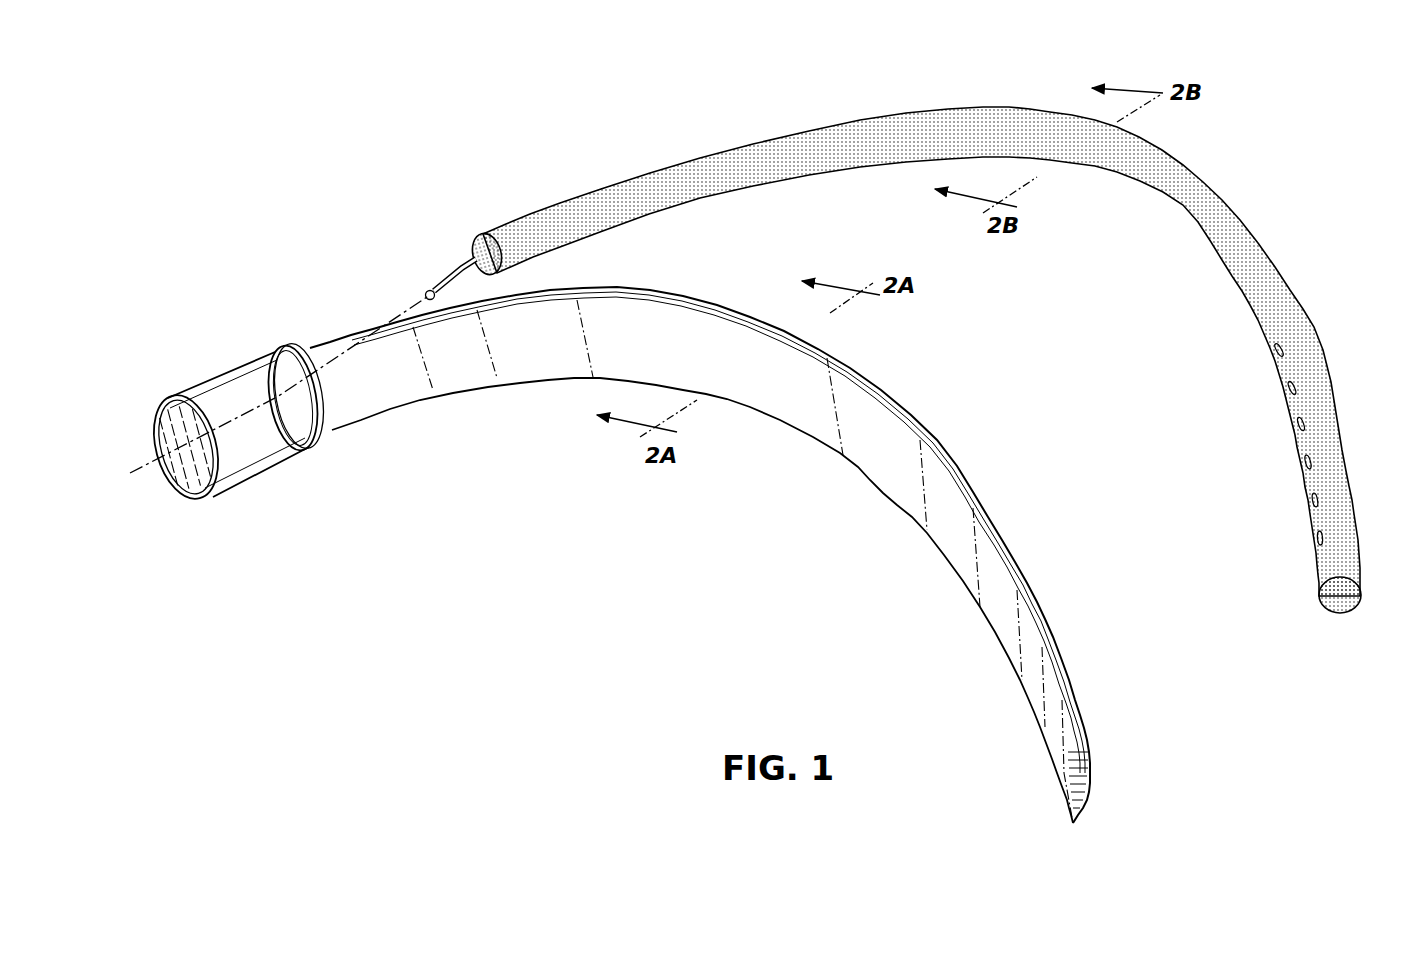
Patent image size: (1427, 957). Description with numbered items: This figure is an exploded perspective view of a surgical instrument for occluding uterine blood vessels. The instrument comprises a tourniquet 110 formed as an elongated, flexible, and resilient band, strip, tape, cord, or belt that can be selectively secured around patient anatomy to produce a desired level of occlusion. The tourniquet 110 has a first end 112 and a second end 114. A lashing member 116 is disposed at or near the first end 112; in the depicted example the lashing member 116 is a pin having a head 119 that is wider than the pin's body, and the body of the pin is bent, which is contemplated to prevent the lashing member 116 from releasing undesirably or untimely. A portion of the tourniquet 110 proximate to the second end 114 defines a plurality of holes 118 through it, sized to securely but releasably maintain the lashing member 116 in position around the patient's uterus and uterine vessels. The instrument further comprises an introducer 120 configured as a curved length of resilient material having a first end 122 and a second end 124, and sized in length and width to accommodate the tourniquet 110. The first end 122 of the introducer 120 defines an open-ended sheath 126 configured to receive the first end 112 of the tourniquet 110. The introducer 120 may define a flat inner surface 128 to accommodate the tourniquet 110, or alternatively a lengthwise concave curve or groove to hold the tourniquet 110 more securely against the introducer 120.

The tourniquet 110 is at (778, 417).
The first end 112 is at (528, 234).
The second end 114 is at (1343, 538).
The lashing member 116 is at (474, 287).
The holes 118 is at (1317, 540).
The head 119 is at (426, 293).
The introducer 120 is at (694, 562).
The first end 122 is at (180, 467).
The second end 124 is at (1066, 778).
The sheath 126 is at (247, 457).
The inner surface 128 is at (553, 365).